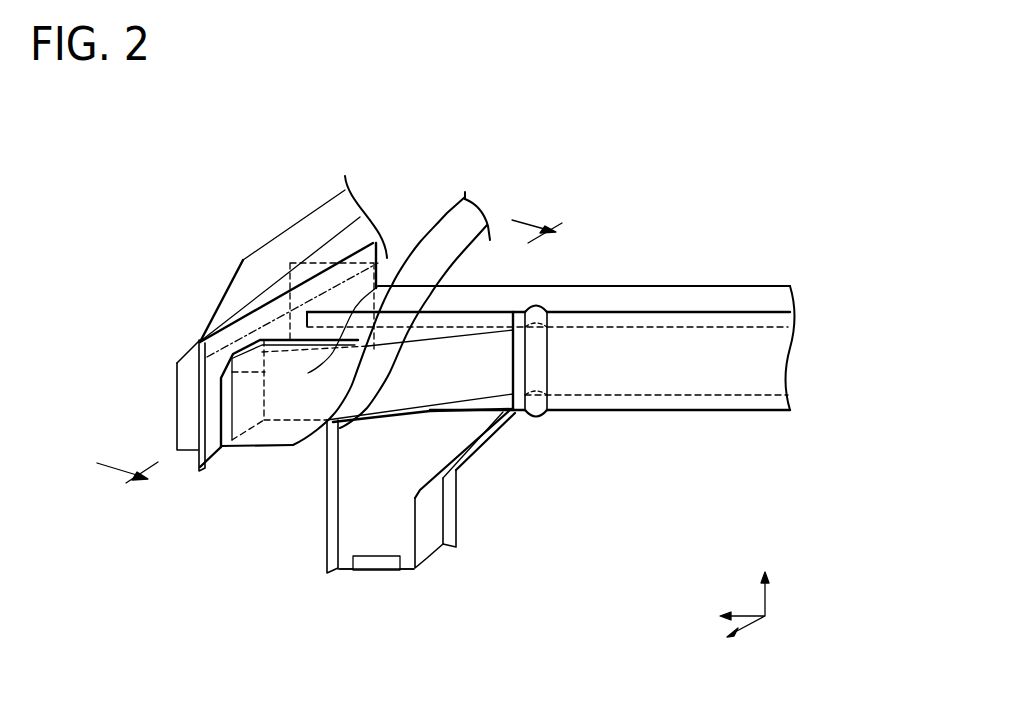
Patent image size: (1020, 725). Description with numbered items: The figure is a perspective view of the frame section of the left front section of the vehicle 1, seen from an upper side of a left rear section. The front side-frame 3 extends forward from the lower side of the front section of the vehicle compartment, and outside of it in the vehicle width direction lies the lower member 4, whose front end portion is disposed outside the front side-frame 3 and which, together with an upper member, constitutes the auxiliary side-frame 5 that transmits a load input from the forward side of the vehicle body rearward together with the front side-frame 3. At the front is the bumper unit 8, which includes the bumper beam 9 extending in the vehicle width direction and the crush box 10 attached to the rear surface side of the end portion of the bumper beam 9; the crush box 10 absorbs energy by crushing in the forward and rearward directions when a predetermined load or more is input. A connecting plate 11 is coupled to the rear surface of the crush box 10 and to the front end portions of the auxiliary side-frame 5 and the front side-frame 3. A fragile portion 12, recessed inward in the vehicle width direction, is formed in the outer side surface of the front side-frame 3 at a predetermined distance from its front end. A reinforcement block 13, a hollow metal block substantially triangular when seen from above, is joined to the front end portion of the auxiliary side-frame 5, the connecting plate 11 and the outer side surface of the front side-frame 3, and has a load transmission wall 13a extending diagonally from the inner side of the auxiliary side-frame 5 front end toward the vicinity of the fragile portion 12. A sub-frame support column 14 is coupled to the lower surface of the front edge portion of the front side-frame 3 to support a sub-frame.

The vehicle 1 is at (637, 108).
The front side-frame 3 is at (727, 300).
The lower member 4 is at (448, 216).
The auxiliary side-frame 5 is at (391, 318).
The bumper unit 8 is at (246, 251).
The bumper beam 9 is at (309, 225).
The crush box 10 is at (188, 418).
The connecting plate 11 is at (213, 389).
The fragile portion 12 is at (538, 368).
The reinforcement block 13 is at (427, 333).
The load transmission wall 13a is at (443, 372).
The sub-frame support column 14 is at (390, 517).